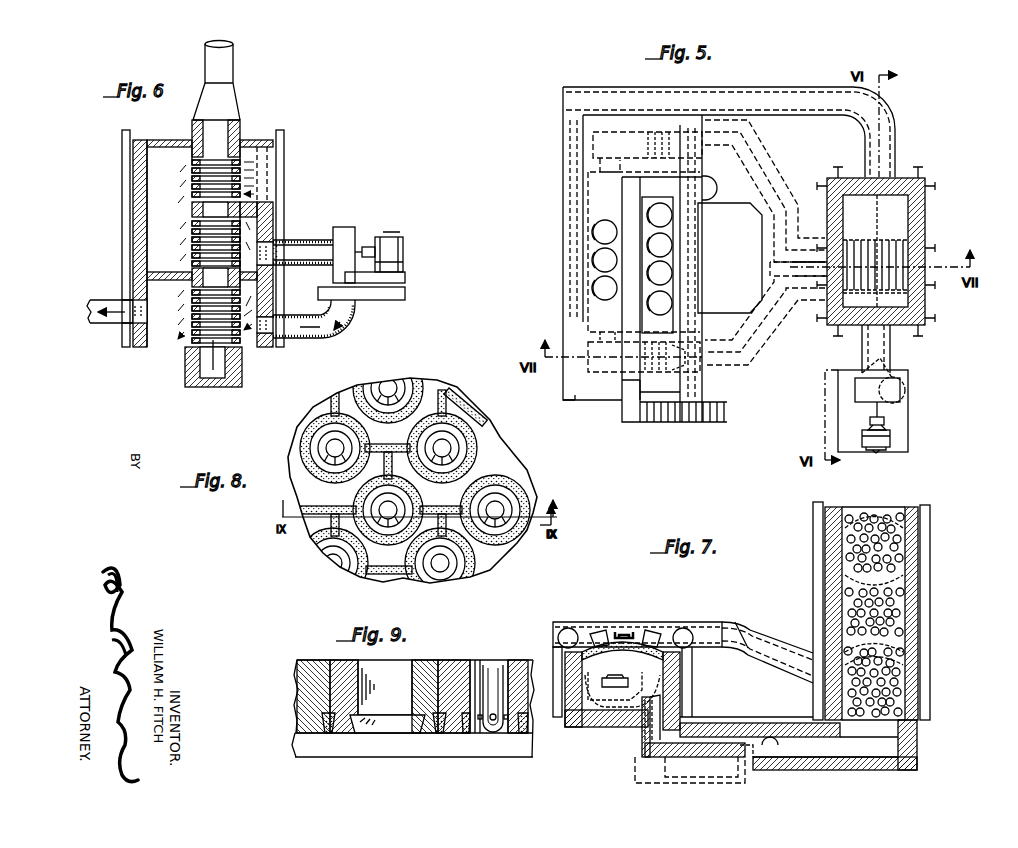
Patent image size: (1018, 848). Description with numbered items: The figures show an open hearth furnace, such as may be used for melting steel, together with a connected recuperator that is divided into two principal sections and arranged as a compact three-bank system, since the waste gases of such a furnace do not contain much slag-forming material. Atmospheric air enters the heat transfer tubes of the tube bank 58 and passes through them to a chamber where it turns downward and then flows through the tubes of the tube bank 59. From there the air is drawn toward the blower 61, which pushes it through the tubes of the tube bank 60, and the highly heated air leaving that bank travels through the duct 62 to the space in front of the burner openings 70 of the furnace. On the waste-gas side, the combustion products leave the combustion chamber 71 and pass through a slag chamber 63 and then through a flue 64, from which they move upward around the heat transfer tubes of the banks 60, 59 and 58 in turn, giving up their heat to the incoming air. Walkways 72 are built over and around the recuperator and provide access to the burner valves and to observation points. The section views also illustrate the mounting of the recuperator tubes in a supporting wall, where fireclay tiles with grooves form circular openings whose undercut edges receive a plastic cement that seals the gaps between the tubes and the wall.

In FIG. 6, the tube bank 58 is at (243, 178).
In FIG. 7, the tube bank 58 is at (890, 546).
In FIG. 6, the tube bank 59 is at (225, 239).
In FIG. 5, the tube bank 59 is at (928, 265).
In FIG. 7, the tube bank 59 is at (890, 598).
In FIG. 6, the tube bank 60 is at (228, 365).
In FIG. 7, the tube bank 60 is at (890, 690).
In FIG. 6, the blower 61 is at (352, 238).
In FIG. 5, the blower 61 is at (898, 395).
In FIG. 6, the duct 62 is at (102, 304).
In FIG. 5, the duct 62 is at (886, 160).
In FIG. 7, the duct 62 is at (770, 654).
In FIG. 7, the slag chamber 63 is at (712, 778).
In FIG. 5, the flue 64 is at (807, 272).
In FIG. 7, the flue 64 is at (803, 760).
In FIG. 5, the burner openings 70 is at (605, 225).
In FIG. 7, the burner openings 70 is at (595, 630).
In FIG. 7, the combustion chamber 71 is at (650, 678).
In FIG. 5, the walkways 72 is at (625, 382).
In FIG. 7, the walkways 72 is at (624, 630).